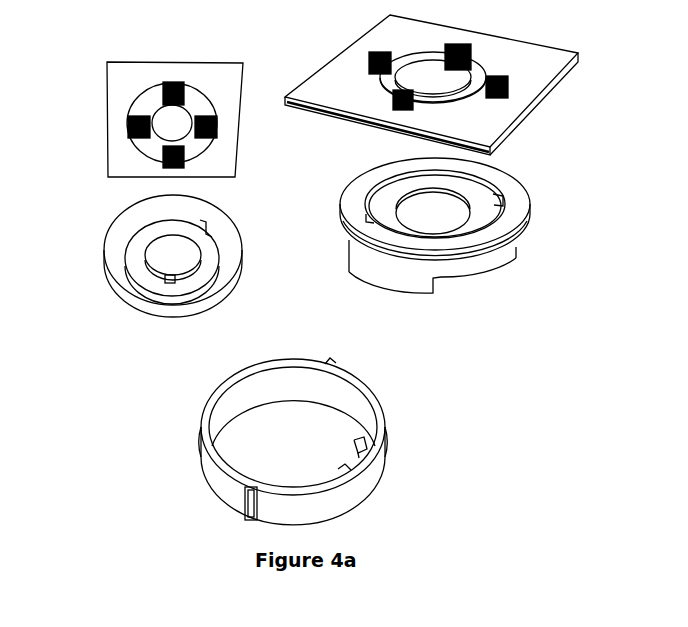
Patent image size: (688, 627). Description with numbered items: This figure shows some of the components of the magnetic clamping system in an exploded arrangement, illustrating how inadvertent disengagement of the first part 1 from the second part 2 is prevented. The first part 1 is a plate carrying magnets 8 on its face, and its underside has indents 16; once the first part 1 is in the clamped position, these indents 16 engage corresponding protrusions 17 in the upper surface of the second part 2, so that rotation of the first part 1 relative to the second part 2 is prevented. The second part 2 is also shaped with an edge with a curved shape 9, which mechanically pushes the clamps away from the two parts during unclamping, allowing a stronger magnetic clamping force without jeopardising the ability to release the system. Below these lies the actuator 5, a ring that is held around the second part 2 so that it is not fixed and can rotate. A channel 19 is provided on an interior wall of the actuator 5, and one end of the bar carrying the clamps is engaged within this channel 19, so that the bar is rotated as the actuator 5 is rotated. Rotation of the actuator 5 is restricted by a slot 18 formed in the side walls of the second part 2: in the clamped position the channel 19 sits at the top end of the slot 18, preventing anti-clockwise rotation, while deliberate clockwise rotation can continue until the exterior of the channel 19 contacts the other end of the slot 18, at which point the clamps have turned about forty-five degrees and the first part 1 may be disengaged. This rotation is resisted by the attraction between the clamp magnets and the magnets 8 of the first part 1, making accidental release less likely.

The first part 1 is at (305, 108).
The second part 2 is at (330, 237).
The actuator 5 is at (284, 441).
The magnets 8 is at (125, 125).
The edge with a curved shape 9 is at (136, 256).
The indents 16 is at (125, 141).
The protrusions 17 is at (562, 181).
The slot 18 is at (485, 227).
The channel 19 is at (408, 459).